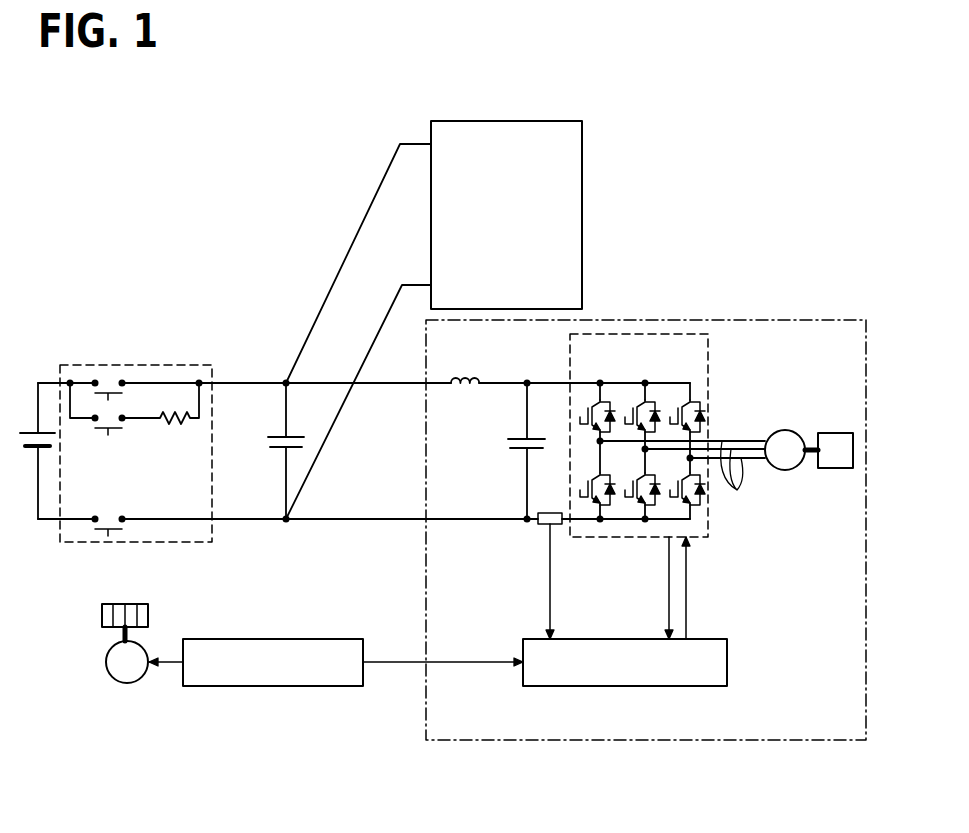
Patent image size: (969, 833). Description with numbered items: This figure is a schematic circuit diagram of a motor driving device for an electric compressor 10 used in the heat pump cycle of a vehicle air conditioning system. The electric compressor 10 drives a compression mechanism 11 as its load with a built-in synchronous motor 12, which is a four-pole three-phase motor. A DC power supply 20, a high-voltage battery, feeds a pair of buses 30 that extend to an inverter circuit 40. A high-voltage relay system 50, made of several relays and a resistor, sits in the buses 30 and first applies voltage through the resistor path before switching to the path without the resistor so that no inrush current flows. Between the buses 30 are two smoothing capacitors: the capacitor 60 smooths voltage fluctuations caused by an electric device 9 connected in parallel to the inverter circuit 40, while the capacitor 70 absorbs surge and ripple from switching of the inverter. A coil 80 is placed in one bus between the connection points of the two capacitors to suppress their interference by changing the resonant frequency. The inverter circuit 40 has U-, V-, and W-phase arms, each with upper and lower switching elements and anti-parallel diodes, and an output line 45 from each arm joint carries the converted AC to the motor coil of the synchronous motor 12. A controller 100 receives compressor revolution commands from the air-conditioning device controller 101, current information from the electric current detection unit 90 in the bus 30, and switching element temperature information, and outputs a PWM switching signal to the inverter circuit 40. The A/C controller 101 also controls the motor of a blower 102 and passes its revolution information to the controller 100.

The electric device 9 is at (532, 120).
The electric compressor 10 is at (749, 320).
The compression mechanism 11 is at (835, 433).
The synchronous motor 12 is at (787, 430).
The DC power supply 20 is at (26, 431).
The buses 30 is at (397, 386).
The inverter circuit 40 is at (682, 334).
The output line 45 is at (681, 480).
The high-voltage relay system 50 is at (186, 365).
The capacitor 60 is at (273, 437).
The capacitor 70 is at (513, 434).
The coil 80 is at (466, 382).
The electric current detection unit 90 is at (557, 525).
The controller 100 is at (625, 687).
The air-conditioning device controller 101 is at (255, 687).
The blower 102 is at (127, 684).